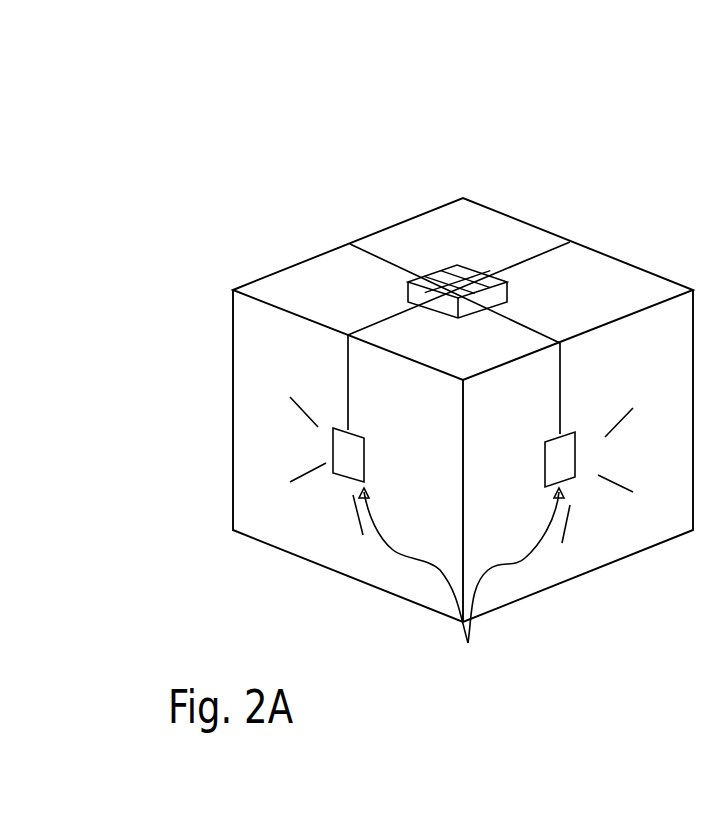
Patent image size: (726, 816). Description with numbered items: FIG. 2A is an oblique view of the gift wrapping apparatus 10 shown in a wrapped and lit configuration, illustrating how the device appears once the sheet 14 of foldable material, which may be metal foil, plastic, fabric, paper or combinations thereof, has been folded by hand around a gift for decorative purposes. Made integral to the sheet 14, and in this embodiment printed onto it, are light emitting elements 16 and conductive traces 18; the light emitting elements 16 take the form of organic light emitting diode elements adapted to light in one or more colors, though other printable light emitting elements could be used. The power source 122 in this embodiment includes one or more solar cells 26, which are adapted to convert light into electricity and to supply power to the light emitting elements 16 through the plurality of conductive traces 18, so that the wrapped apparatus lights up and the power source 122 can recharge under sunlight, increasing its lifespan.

The gift wrapping apparatus 10 is at (265, 160).
The sheet 14 is at (642, 288).
The conductive traces 18 is at (382, 259).
The light emitting elements 16 is at (461, 547).
The power source 122 is at (457, 265).
The solar cells 26 is at (493, 280).